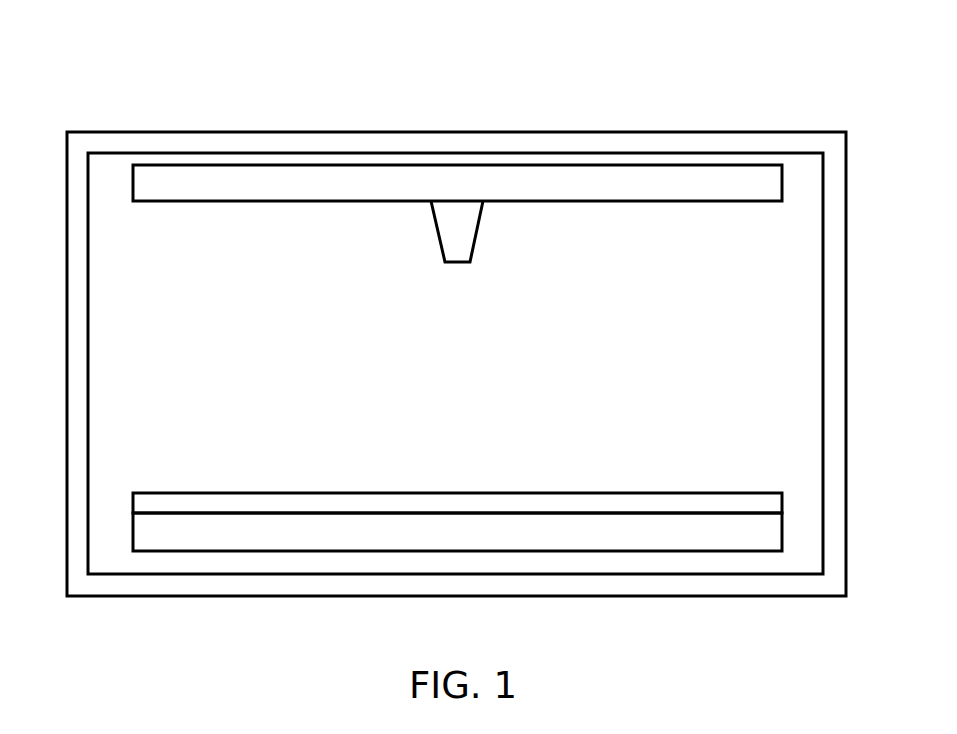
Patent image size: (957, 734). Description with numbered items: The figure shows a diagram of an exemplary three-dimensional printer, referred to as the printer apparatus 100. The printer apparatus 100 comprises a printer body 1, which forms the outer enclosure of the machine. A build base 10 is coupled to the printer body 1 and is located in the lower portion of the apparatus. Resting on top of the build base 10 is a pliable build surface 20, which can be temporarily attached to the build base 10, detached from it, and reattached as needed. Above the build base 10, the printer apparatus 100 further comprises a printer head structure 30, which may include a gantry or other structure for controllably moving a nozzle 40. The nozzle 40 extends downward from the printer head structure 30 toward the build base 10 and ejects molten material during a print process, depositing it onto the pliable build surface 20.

The printer apparatus 100 is at (118, 80).
The printer body 1 is at (833, 316).
The printer head structure 30 is at (766, 181).
The nozzle 40 is at (465, 241).
The pliable build surface 20 is at (766, 503).
The build base 10 is at (766, 537).